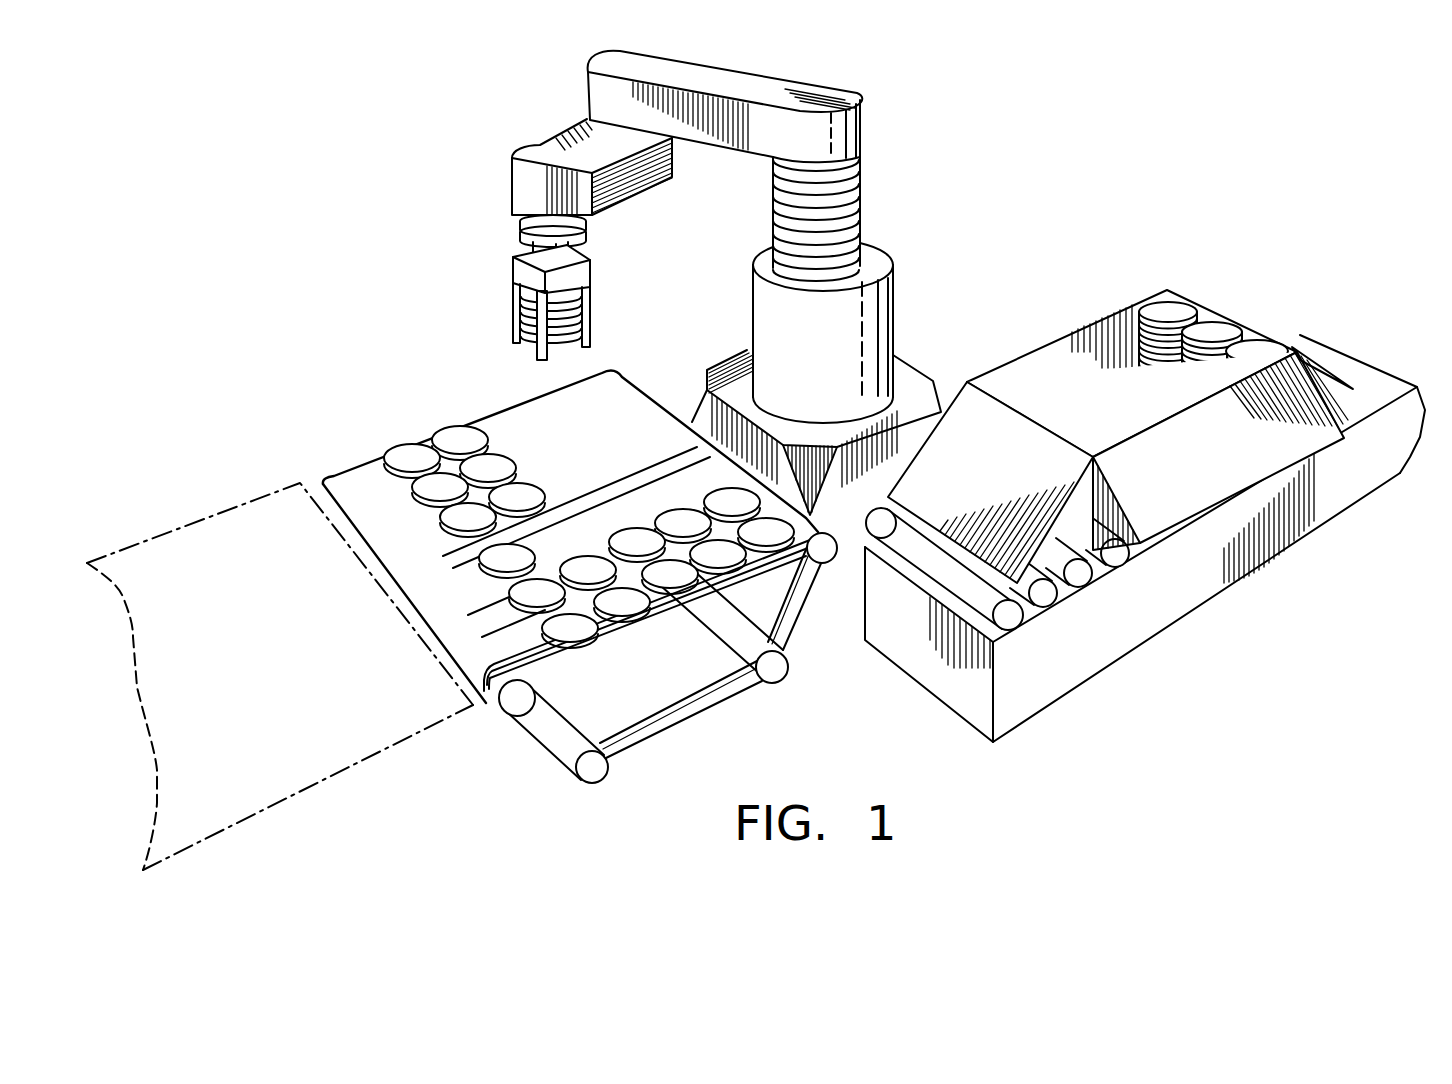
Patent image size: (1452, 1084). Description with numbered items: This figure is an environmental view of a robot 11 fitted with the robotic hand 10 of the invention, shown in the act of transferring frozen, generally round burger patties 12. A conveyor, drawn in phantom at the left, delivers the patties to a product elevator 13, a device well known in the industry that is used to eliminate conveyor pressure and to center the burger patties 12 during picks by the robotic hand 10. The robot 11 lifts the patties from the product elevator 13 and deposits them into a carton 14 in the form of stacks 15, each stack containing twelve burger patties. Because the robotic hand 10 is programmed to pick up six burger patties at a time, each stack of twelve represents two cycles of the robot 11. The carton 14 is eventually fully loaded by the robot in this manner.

The robotic hand 10 is at (502, 292).
The robot 11 is at (876, 128).
The burger patties 12 is at (457, 437).
The product elevator 13 is at (523, 730).
The carton 14 is at (1120, 414).
The stacks 15 is at (1213, 328).